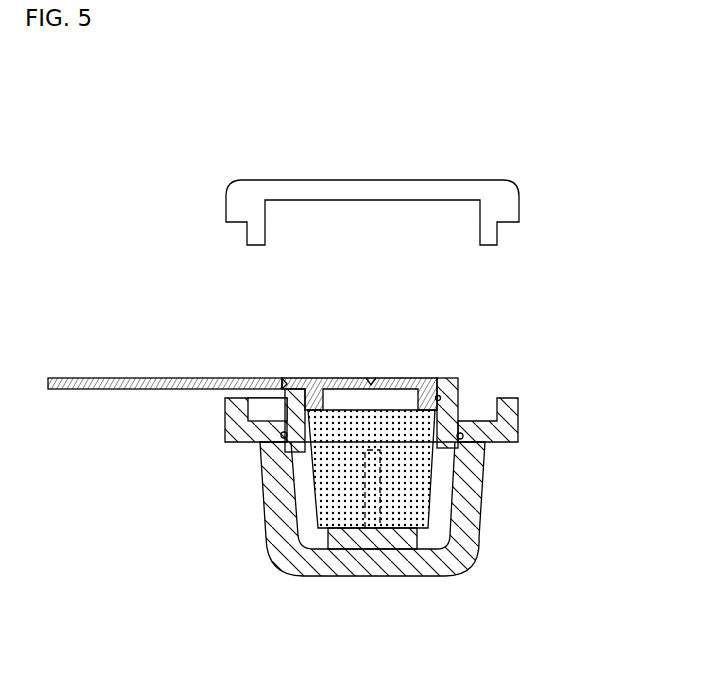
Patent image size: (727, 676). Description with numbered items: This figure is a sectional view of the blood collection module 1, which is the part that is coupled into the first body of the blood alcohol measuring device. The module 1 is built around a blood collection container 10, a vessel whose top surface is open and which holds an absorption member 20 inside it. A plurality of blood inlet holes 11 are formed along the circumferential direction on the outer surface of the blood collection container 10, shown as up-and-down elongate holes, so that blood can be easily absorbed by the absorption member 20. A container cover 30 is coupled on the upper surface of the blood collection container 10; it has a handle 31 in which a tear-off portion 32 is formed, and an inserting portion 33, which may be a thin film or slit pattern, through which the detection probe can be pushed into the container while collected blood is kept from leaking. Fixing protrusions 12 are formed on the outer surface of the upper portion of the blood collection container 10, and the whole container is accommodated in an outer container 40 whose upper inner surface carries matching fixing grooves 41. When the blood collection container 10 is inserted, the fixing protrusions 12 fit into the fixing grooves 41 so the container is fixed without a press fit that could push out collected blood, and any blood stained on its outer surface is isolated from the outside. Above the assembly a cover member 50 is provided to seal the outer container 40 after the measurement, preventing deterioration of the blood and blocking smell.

The blood collection module 1 is at (164, 234).
The cover member 50 is at (493, 197).
The container cover 30 is at (418, 377).
The handle 31 is at (112, 378).
The tear-off portion 32 is at (278, 386).
The inserting portion 33 is at (370, 377).
The blood collection container 10 is at (462, 434).
The fixing protrusions 12 is at (282, 436).
The fixing grooves 41 is at (298, 448).
The outer container 40 is at (466, 494).
The absorption member 20 is at (418, 511).
The blood inlet holes 11 is at (312, 530).